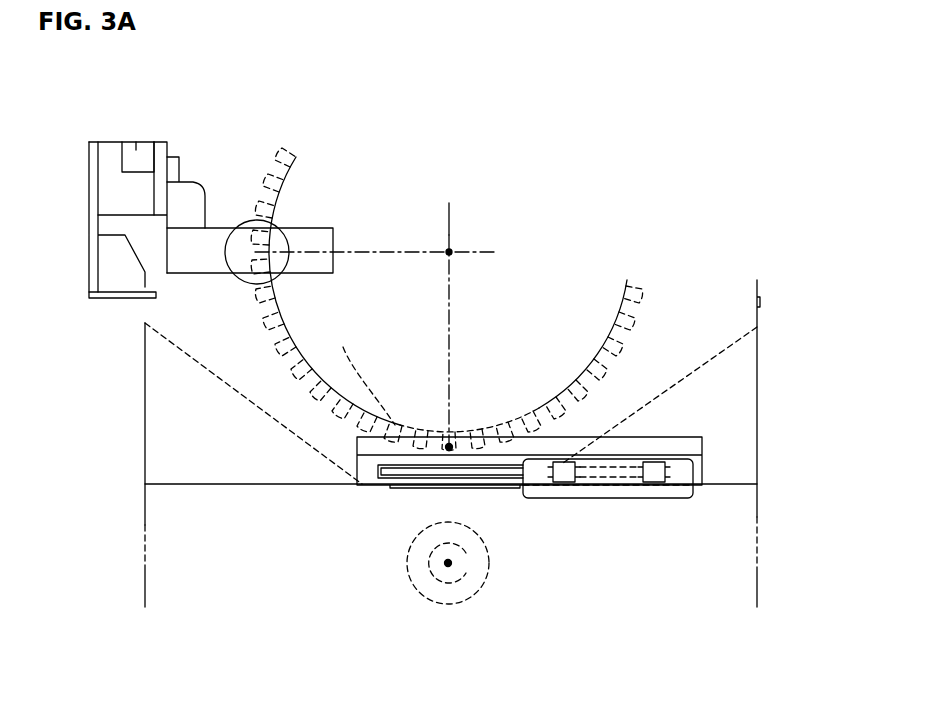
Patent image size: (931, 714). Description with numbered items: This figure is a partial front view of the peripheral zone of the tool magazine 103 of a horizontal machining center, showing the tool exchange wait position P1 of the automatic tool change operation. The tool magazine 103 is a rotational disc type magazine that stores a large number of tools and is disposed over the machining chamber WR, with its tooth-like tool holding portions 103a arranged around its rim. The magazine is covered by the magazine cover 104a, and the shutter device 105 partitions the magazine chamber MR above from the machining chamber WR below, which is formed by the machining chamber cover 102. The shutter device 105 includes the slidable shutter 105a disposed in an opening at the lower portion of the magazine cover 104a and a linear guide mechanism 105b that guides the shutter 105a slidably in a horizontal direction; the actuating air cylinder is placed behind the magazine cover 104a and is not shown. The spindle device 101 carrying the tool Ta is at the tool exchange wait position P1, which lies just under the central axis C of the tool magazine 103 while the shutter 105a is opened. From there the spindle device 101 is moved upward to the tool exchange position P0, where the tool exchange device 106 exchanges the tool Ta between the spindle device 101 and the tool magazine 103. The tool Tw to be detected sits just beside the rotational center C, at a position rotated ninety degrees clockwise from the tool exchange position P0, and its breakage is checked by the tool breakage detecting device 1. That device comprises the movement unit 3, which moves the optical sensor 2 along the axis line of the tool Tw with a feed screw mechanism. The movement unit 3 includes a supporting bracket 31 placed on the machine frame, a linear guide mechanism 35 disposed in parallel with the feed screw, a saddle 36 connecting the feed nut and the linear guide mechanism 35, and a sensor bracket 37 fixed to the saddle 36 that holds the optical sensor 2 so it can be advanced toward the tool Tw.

The tool breakage detecting device 1 is at (80, 212).
The optical sensor 2 is at (201, 274).
The movement unit 3 is at (106, 138).
The supporting bracket 31 is at (102, 299).
The linear guide mechanism 35 is at (146, 141).
The saddle 36 is at (160, 141).
The sensor bracket 37 is at (206, 205).
The spindle device 101 is at (410, 585).
The machining chamber cover 102 is at (146, 568).
The tool magazine 103 is at (604, 333).
The gear teeth 103a is at (395, 420).
The magazine cover 104a is at (758, 364).
The shutter device 105 is at (523, 508).
The shutter 105a is at (660, 499).
The linear guide mechanism 105b is at (390, 486).
The tool exchange device 106 is at (358, 590).
The tool to be detected Tw is at (282, 240).
The central axis C is at (457, 325).
The tool exchange position P0 is at (450, 446).
The tool exchange wait position P1 is at (449, 565).
The tool Ta is at (460, 558).
The magazine chamber MR is at (724, 273).
The machining chamber WR is at (710, 578).